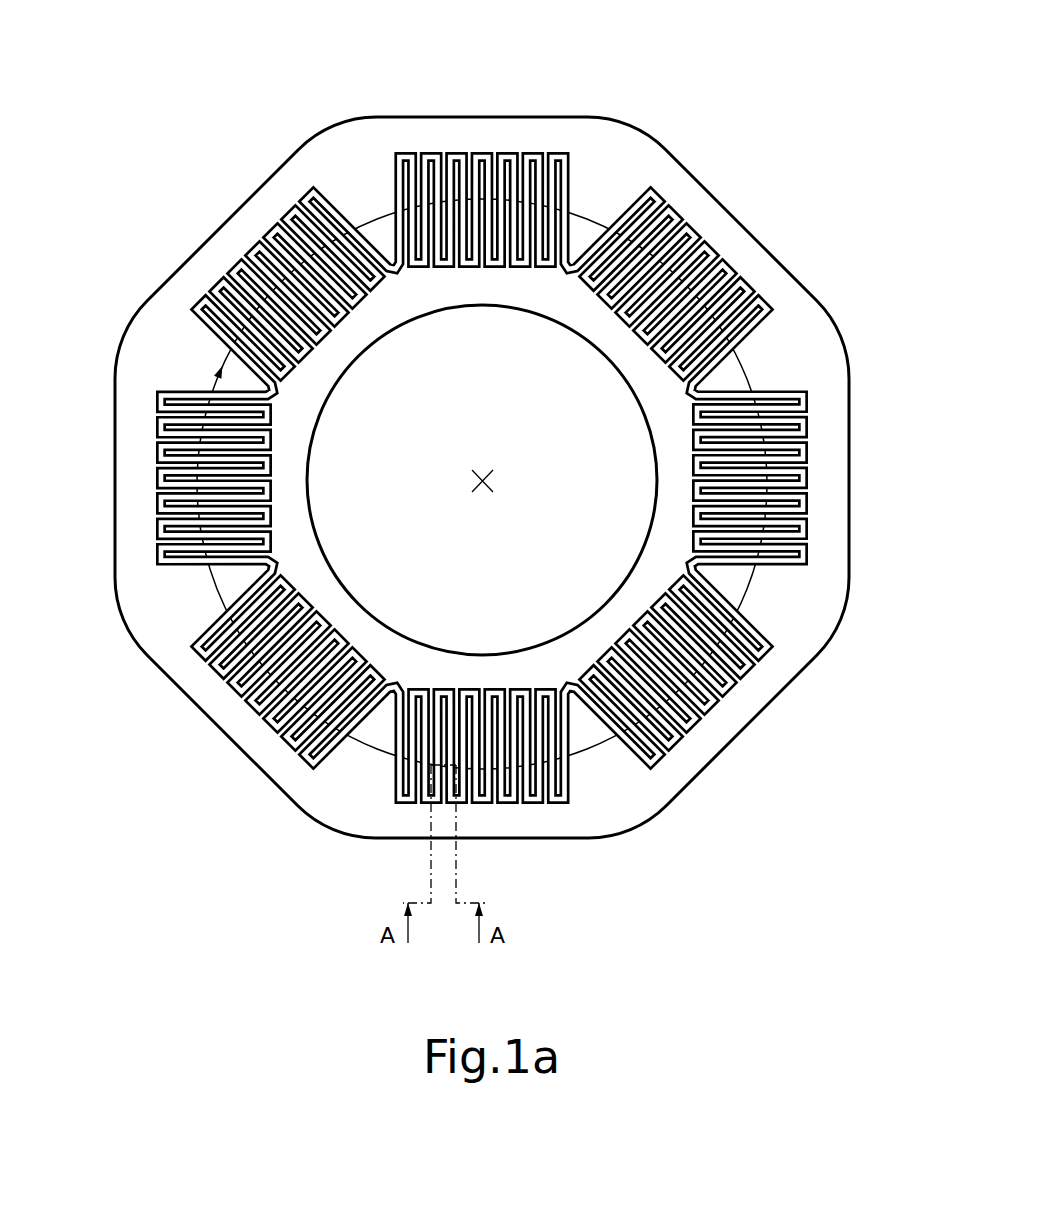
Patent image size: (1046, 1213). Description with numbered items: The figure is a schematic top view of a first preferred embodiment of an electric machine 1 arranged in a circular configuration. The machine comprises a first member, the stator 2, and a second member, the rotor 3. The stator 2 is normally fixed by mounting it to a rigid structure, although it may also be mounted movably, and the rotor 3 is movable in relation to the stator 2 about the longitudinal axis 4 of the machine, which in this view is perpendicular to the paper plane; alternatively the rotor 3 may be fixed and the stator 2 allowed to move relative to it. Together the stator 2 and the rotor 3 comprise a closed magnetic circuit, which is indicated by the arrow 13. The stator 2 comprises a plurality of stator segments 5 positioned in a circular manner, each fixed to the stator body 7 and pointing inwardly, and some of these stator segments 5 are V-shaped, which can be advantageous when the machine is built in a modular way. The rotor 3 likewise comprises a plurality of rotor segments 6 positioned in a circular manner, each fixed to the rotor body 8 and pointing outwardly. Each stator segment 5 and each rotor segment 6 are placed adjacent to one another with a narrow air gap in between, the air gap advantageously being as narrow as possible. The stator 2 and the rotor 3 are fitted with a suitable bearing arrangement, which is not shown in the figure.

The electric machine 1 is at (499, 432).
The stator 2 is at (223, 215).
The rotor 3 is at (325, 402).
The longitudinal axis 4 is at (484, 490).
The stator segments 5 is at (522, 167).
The rotor segments 6 is at (533, 256).
The stator body 7 is at (653, 154).
The rotor body 8 is at (648, 392).
The arrow indicating closed magnetic circuit 13 is at (388, 216).